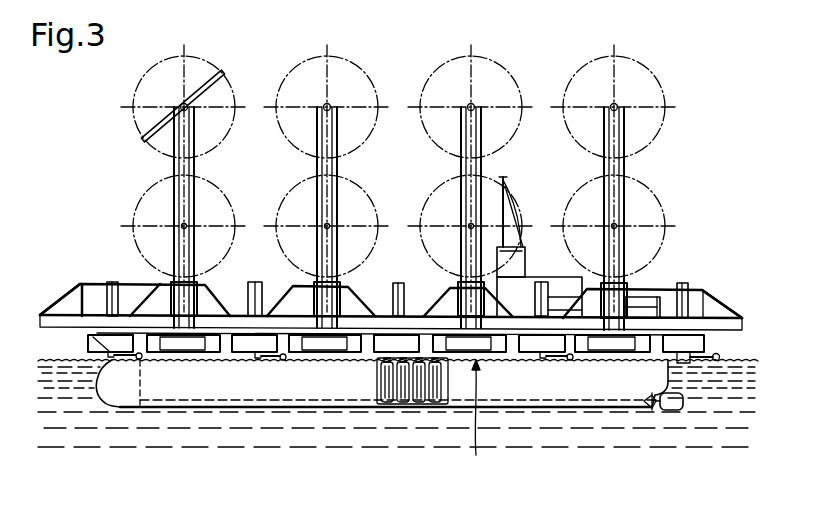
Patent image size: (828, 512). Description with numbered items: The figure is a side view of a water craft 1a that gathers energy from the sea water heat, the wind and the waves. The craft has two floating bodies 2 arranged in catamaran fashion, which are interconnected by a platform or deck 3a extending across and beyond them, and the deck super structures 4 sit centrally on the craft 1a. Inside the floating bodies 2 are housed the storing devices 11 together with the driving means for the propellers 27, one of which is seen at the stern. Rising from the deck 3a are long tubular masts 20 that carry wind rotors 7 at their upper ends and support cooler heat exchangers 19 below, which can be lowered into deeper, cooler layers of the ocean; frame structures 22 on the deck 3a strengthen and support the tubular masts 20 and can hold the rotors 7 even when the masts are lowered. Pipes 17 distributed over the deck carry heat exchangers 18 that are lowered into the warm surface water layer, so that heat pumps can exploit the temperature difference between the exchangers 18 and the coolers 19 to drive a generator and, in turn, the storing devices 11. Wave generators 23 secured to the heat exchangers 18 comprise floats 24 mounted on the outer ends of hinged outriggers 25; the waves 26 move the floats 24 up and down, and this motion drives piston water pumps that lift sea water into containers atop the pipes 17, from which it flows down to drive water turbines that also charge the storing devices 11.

The water craft 1a is at (414, 55).
The floating bodies 2 is at (296, 385).
The platform or deck 3a is at (254, 298).
The deck super structures 4 is at (513, 288).
The wind rotors 7 is at (213, 85).
The storing devices 11 is at (424, 358).
The pipes 17 is at (110, 282).
The heat exchangers 18 is at (95, 341).
The cooler heat exchangers 19 is at (181, 345).
The tubular masts 20 is at (176, 160).
The frame structures 22 is at (68, 300).
The wave generators 23 is at (540, 360).
The floats 24 is at (570, 360).
The hinged outriggers 25 is at (553, 360).
The waves 26 is at (484, 422).
The propellers 27 is at (652, 410).